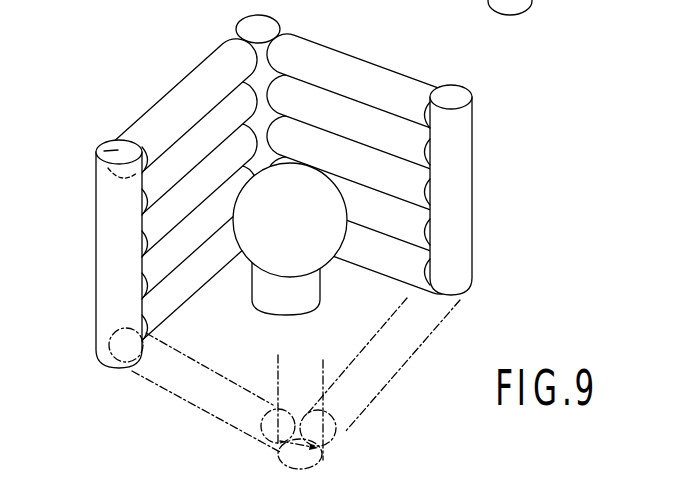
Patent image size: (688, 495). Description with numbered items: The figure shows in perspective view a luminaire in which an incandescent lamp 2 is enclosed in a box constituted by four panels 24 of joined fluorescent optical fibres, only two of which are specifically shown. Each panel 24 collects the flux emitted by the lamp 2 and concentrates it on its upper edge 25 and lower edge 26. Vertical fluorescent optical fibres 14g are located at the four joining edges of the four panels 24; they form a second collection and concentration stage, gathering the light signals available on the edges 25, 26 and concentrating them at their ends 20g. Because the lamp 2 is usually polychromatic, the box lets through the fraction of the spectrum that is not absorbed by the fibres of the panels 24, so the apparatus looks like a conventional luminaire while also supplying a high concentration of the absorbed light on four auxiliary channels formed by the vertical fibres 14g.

The incandescent lamp 2 is at (236, 272).
The vertical fluorescent optical fibres 14g is at (112, 294).
The ends of the vertical fluorescent optical fibres 20g is at (458, 96).
The panel 24 is at (163, 95).
The upper edge 25 is at (116, 151).
The lower edge 26 is at (249, 29).